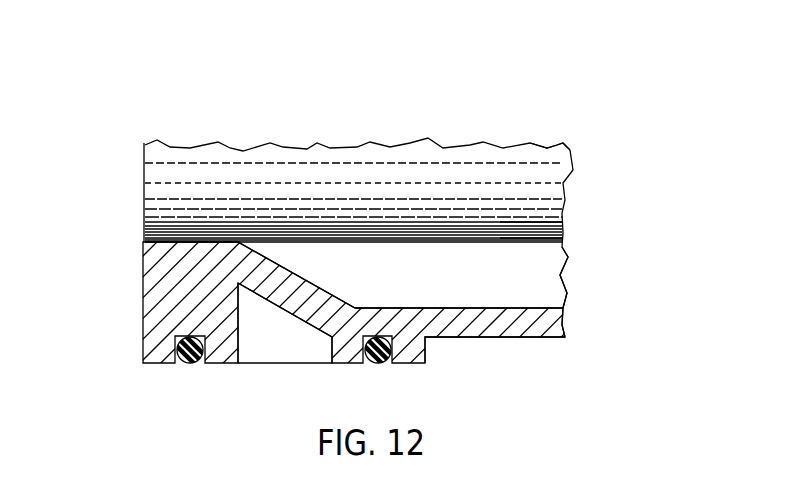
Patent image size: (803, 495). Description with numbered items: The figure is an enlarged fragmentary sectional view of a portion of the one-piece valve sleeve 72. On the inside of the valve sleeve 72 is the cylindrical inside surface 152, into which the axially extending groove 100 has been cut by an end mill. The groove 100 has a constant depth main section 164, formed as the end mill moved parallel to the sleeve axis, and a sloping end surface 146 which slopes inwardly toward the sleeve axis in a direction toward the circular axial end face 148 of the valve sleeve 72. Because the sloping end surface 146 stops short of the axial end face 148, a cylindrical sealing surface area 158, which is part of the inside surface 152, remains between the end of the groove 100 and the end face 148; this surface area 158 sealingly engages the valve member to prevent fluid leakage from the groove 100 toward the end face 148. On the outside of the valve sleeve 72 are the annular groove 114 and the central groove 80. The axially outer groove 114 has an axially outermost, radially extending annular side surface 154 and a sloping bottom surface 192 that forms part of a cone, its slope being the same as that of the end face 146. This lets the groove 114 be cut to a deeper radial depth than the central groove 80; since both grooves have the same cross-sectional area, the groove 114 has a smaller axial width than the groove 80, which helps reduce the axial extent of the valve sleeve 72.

The valve sleeve 72 is at (130, 178).
The cylindrical inside surface 152 is at (560, 146).
The axially extending groove 100 is at (527, 260).
The constant depth main section of the groove 164 is at (548, 277).
The sloping end surface 146 is at (300, 277).
The cylindrical sealing surface area 158 is at (177, 243).
The circular axial end face 148 is at (143, 330).
The annular side surface of the groove 154 is at (262, 348).
The annular groove 114 is at (284, 366).
The sloping bottom surface of the groove 192 is at (307, 321).
The central groove 80 is at (490, 340).